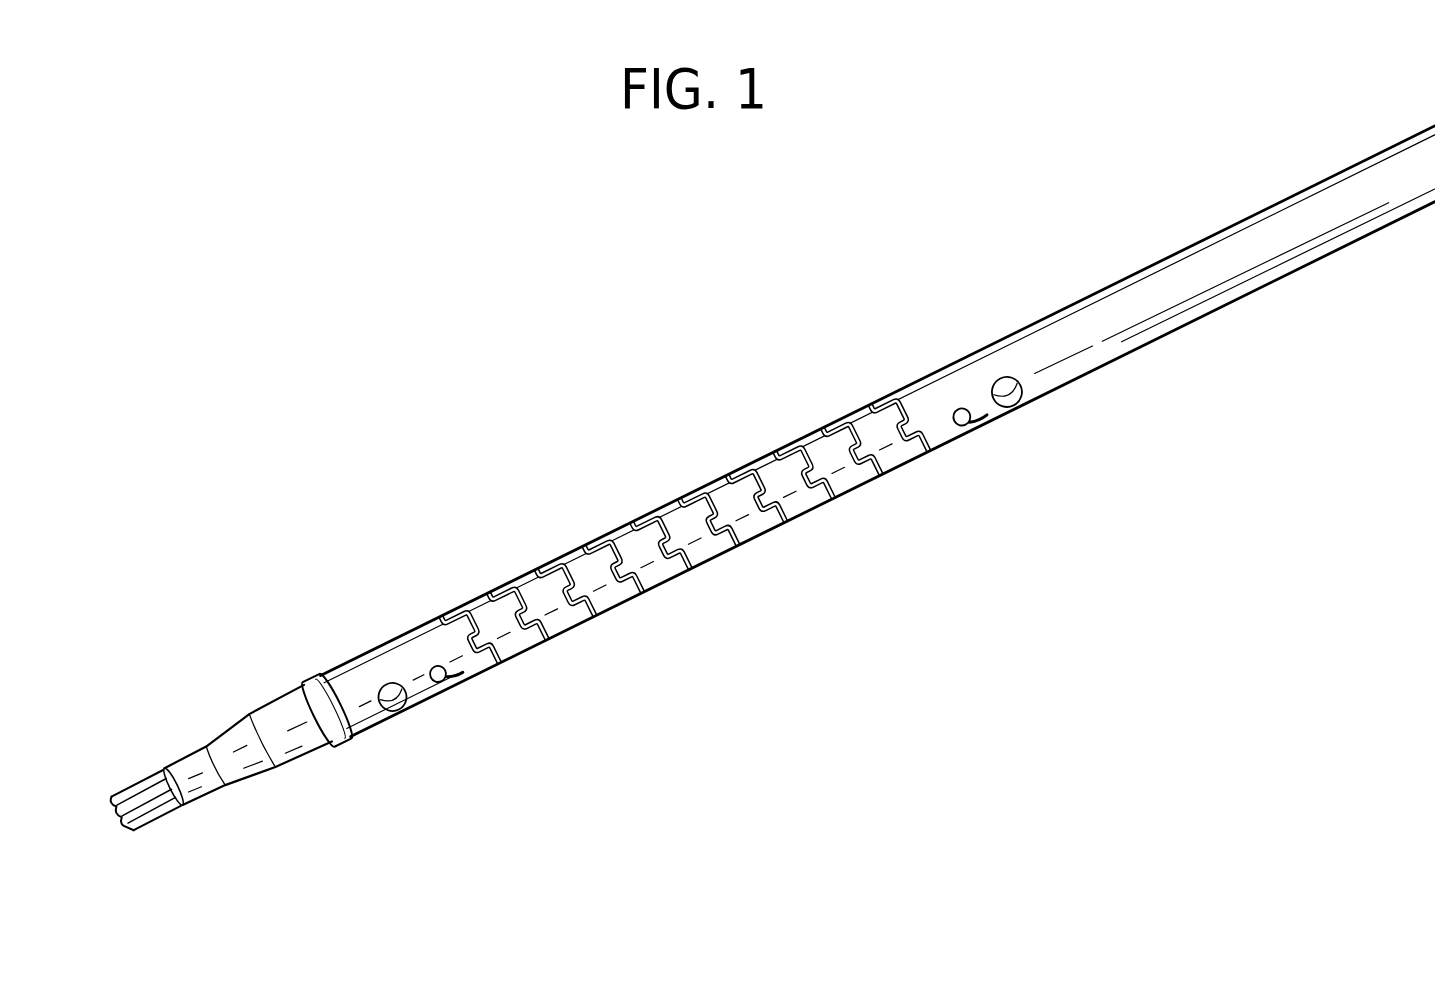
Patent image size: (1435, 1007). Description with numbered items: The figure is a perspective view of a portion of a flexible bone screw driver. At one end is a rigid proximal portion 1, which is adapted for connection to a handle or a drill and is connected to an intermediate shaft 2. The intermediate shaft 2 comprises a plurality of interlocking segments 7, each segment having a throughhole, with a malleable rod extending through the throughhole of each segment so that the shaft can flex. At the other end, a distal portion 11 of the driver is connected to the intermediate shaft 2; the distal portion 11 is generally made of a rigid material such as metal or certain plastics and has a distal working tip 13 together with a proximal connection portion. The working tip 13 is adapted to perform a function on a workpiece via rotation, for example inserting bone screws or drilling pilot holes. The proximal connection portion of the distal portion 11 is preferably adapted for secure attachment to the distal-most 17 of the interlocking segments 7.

The rigid proximal portion 1 is at (762, 463).
The intermediate shaft 2 is at (878, 414).
The interlocking segments 7 is at (626, 524).
The distal portion 11 is at (299, 777).
The working tip 13 is at (140, 783).
The distal-most interlocking segment 17 is at (357, 657).